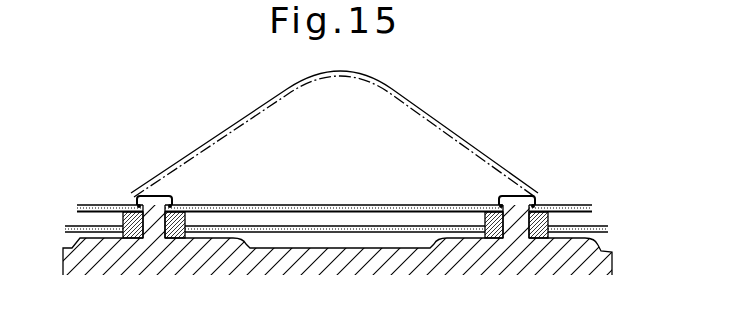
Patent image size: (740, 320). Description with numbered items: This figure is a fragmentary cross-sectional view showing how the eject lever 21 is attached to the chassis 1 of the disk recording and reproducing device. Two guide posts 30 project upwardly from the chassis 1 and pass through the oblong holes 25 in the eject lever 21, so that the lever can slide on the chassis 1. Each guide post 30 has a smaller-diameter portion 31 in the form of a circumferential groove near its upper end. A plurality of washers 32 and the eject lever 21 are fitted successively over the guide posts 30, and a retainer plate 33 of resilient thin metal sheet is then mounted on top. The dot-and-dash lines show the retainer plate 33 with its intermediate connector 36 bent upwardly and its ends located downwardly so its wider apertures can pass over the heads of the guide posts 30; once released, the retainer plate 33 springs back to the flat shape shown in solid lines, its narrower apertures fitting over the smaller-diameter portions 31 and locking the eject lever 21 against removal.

The chassis 1 is at (334, 264).
The eject lever 21 is at (310, 226).
The oblong holes 25 is at (113, 233).
The guide posts 30 is at (150, 228).
The smaller-diameter portion 31 is at (155, 196).
The washers 32 is at (125, 210).
The retainer plate 33 is at (354, 205).
The intermediate connector 36 is at (263, 205).